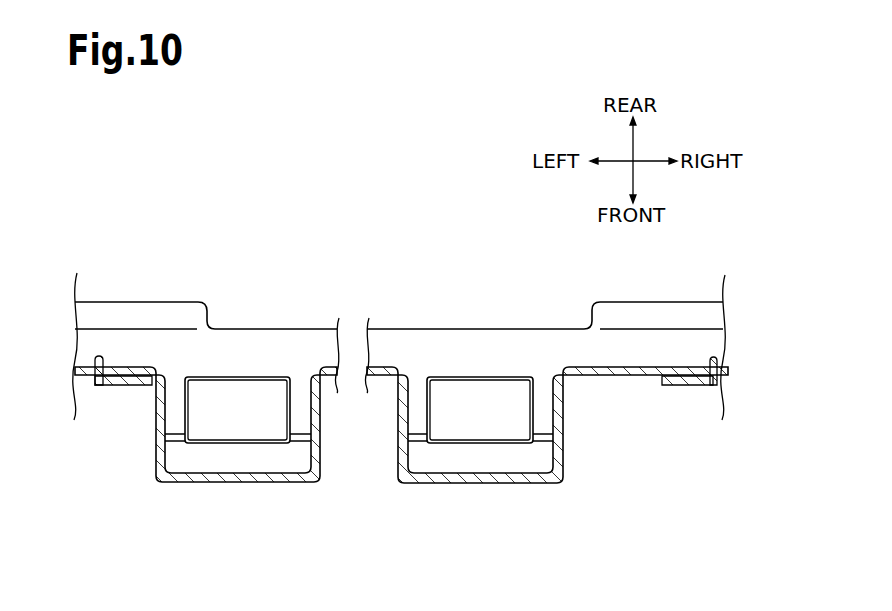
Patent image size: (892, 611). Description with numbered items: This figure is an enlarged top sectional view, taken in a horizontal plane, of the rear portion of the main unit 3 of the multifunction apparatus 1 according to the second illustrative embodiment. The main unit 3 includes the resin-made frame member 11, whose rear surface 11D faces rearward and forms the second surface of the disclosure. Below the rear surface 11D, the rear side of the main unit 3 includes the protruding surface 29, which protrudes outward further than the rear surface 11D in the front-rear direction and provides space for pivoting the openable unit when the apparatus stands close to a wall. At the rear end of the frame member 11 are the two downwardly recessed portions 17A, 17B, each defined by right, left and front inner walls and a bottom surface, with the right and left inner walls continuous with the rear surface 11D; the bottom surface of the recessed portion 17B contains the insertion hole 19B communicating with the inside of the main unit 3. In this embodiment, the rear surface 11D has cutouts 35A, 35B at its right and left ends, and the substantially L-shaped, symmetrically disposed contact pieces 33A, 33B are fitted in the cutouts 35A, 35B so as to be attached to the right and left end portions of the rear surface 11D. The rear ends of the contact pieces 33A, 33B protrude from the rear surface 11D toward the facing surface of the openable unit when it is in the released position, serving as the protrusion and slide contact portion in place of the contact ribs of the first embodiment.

The multifunction apparatus 1 is at (345, 283).
The main unit 3 is at (412, 342).
The frame member 11 is at (547, 469).
The rear surface 11D is at (572, 365).
The recessed portion 17A is at (490, 465).
The recessed portion 17B is at (242, 462).
The insertion hole 19B is at (245, 382).
The protruding surface 29 is at (167, 313).
The contact piece 33A is at (697, 388).
The contact piece 33B is at (120, 388).
The cutout 35A is at (708, 360).
The cutout 35B is at (105, 362).